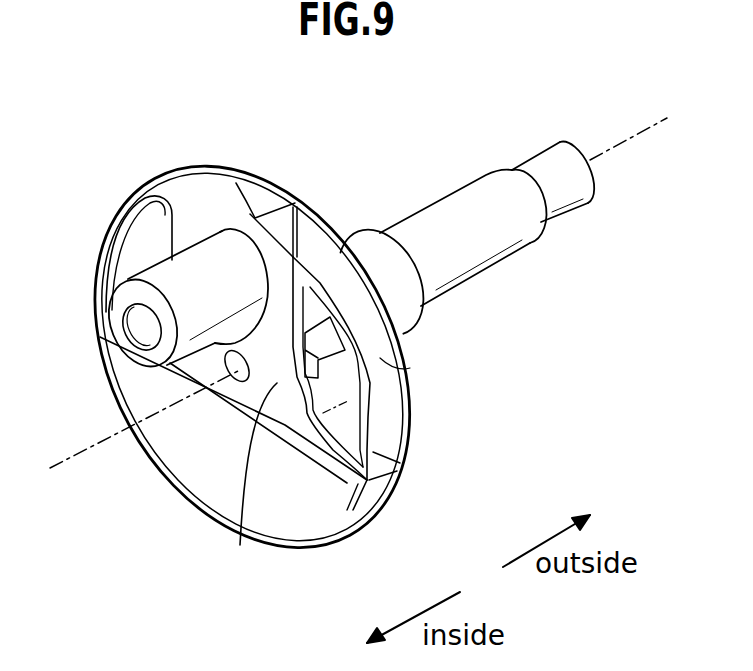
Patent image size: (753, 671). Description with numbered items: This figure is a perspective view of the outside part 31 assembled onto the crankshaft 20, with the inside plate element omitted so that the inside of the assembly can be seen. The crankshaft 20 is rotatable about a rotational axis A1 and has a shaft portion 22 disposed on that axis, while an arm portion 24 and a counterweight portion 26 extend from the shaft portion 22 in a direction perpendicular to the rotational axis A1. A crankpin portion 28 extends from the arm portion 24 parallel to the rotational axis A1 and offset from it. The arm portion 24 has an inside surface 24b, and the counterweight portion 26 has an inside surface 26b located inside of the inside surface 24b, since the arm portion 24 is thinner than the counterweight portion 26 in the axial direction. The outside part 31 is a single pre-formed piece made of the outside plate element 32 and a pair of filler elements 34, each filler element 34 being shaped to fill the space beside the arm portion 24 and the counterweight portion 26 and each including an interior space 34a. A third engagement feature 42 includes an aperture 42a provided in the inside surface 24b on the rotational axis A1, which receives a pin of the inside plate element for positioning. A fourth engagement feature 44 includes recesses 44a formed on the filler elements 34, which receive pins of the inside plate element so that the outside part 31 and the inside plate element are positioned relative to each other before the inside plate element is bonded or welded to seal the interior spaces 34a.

The crankshaft 20 is at (531, 138).
The shaft portion 22 is at (407, 332).
The arm portion 24 is at (257, 195).
The inside surface of the arm portion 24b is at (248, 482).
The counterweight portion 26 is at (390, 503).
The inside surface of the counterweight portion 26b is at (294, 496).
The crankpin portion 28 is at (125, 265).
The outside part 31 is at (280, 357).
The outside plate element 32 is at (270, 185).
The filler element 34 is at (112, 217).
The interior space 34a is at (133, 237).
The third engagement feature 42 is at (183, 457).
The aperture 42a is at (224, 384).
The fourth engagement feature 44 is at (415, 368).
The recess 44a is at (335, 365).
The rotational axis A1 is at (630, 133).